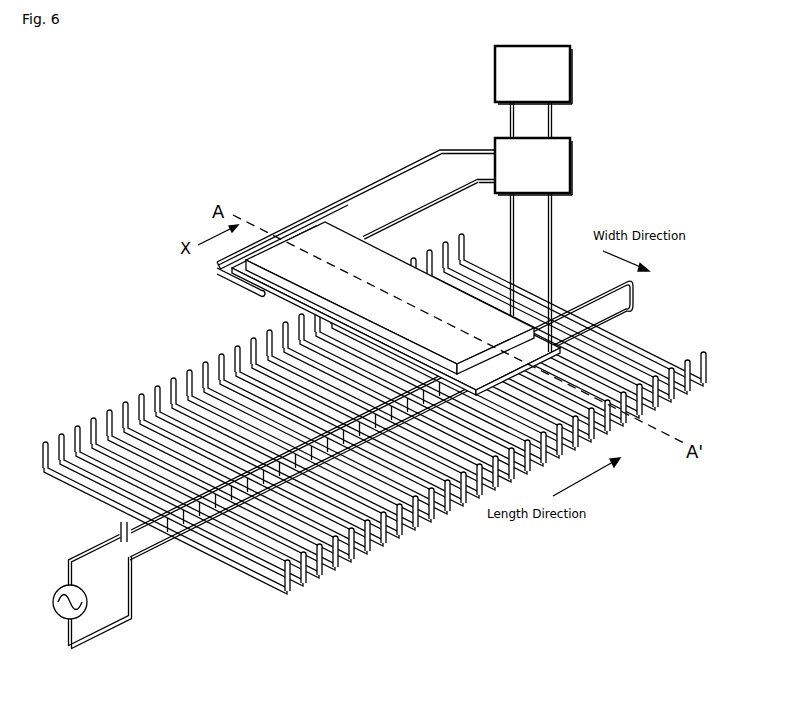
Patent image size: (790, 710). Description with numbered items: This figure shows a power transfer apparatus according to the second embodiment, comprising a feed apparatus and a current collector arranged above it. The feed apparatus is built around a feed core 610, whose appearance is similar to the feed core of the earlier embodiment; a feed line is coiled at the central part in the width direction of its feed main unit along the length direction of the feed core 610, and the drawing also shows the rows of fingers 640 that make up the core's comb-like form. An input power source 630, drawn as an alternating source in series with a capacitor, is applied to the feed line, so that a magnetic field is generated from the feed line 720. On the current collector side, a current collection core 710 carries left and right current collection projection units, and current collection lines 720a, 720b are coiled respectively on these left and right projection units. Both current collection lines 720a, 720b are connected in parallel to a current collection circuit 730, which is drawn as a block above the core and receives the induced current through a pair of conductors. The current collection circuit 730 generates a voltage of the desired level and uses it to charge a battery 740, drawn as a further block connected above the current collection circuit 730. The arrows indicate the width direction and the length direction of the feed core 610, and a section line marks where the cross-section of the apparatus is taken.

The feed core 610 is at (371, 414).
The input power source 630 is at (58, 590).
The electrode fingers 640 is at (68, 432).
The current collection core 710 is at (336, 228).
The feed line 720 is at (332, 272).
The current collection line 720a is at (218, 272).
The current collection line 720b is at (308, 305).
The current collection circuit 730 is at (572, 153).
The battery 740 is at (572, 65).